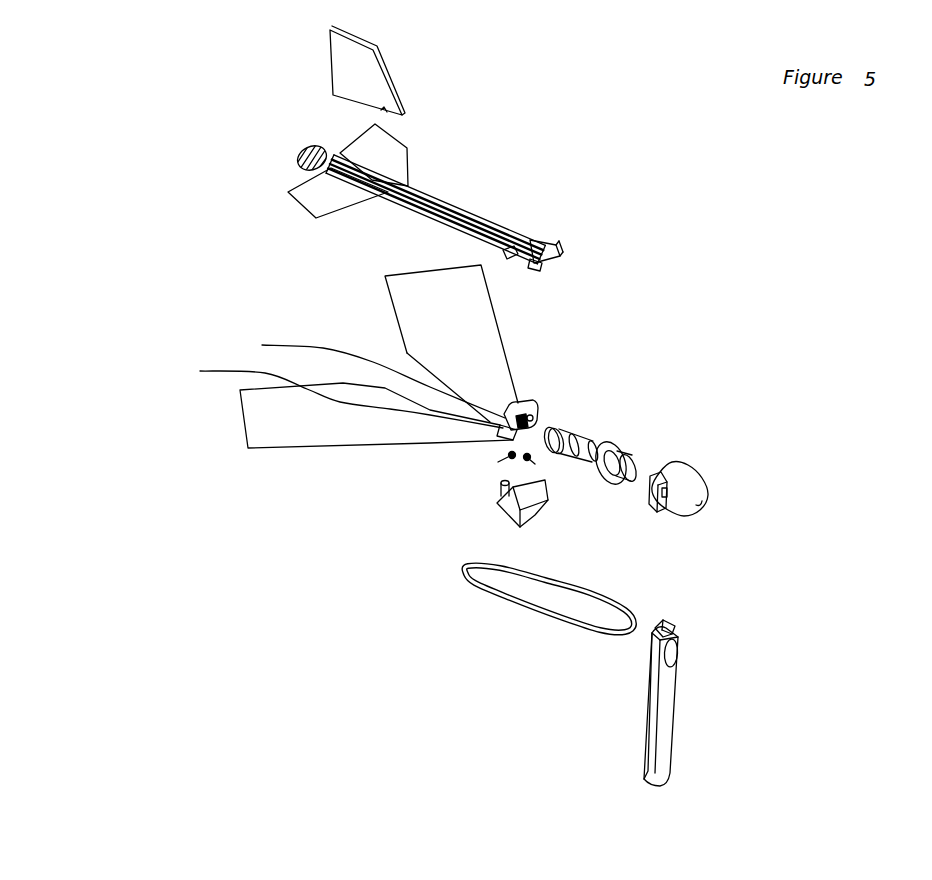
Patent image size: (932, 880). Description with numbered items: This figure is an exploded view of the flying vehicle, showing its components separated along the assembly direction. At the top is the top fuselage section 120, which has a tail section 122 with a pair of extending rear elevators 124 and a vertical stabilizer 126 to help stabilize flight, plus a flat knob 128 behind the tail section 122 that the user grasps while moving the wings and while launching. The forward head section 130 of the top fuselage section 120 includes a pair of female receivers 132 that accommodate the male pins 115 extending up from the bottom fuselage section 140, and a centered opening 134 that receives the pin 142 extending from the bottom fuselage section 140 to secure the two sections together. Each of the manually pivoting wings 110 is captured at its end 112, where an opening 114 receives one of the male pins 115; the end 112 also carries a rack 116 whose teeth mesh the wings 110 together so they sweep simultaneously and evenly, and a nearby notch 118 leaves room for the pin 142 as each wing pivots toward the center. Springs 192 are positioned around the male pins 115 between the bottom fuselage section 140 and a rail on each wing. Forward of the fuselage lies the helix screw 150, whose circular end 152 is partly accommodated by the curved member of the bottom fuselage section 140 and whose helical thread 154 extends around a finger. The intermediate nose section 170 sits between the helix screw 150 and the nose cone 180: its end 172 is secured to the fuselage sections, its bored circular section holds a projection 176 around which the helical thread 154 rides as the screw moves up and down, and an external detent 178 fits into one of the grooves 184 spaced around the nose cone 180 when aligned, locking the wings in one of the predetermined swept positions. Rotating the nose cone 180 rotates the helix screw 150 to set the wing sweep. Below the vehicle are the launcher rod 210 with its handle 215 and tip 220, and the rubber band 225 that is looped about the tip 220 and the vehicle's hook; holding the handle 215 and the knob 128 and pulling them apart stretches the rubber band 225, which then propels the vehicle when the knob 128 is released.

The wings 110 is at (506, 337).
The end of the wing 112 is at (500, 424).
The opening 114 is at (430, 444).
The male pins 115 is at (518, 284).
The rack 116 is at (263, 345).
The notch 118 is at (545, 360).
The top fuselage section 120 is at (470, 212).
The tail section 122 is at (286, 180).
The rear elevators 124 is at (314, 220).
The vertical stabilizer 126 is at (378, 67).
The flat knob 128 is at (296, 150).
The head section 130 is at (522, 239).
The female receivers 132 is at (549, 249).
The centered opening 134 is at (510, 261).
The bottom fuselage section 140 is at (503, 506).
The pin 142 is at (493, 488).
The helix screw 150 is at (622, 422).
The circular end 152 is at (555, 427).
The helical thread 154 is at (557, 454).
The intermediate nose section 170 is at (620, 431).
The end of the intermediate nose section 172 is at (613, 447).
The projection 176 is at (633, 460).
The detent 178 is at (613, 483).
The nose cone 180 is at (695, 486).
The grooves 184 is at (676, 470).
The springs 192 is at (508, 461).
The launcher rod 210 is at (672, 703).
The handle 215 is at (665, 763).
The tip 220 is at (674, 626).
The rubber band 225 is at (611, 609).